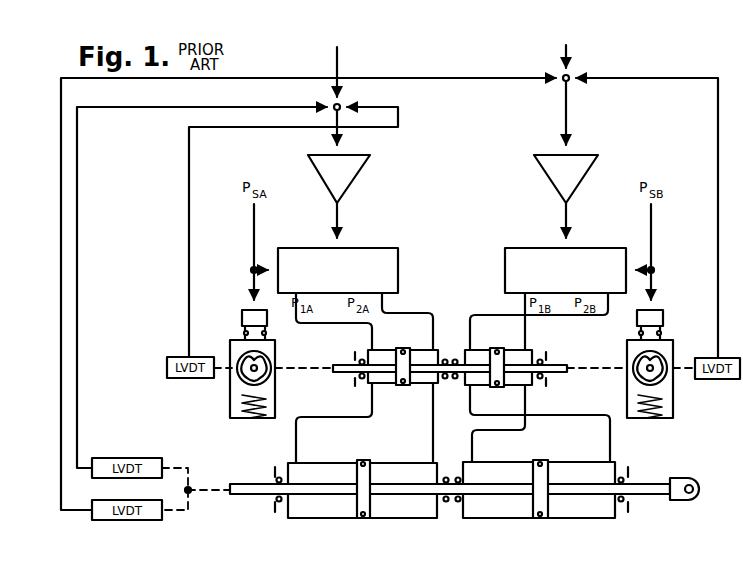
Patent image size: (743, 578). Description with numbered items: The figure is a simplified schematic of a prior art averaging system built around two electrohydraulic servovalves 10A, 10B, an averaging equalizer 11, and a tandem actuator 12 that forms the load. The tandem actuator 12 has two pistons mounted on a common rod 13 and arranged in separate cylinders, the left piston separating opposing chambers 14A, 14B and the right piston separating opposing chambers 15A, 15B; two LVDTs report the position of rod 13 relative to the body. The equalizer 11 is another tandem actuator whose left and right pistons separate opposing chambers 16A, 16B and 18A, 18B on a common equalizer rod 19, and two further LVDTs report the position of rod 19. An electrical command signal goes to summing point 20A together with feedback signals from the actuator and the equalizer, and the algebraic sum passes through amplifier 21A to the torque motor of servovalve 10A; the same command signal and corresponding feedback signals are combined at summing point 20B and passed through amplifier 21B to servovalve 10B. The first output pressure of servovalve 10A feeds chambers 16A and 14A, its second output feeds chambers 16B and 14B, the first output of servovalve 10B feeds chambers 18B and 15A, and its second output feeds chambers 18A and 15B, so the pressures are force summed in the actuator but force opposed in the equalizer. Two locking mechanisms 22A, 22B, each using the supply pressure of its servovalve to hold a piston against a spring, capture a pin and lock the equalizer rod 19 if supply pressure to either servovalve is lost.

The electrohydraulic servovalve 10A is at (395, 248).
The electrohydraulic servovalve 10B is at (522, 248).
The averaging equalizer 11 is at (451, 328).
The tandem actuator 12 is at (453, 512).
The common rod 13 is at (400, 492).
The actuator chamber 14A is at (356, 490).
The actuator chamber 14B is at (387, 489).
The actuator chamber 15A is at (545, 490).
The actuator chamber 15B is at (559, 489).
The equalizer chamber 16A is at (380, 386).
The equalizer chamber 16B is at (425, 387).
The equalizer chamber 18A is at (476, 387).
The equalizer chamber 18B is at (520, 387).
The equalizer rod 19 is at (556, 364).
The summing point 20A is at (346, 104).
The summing point 20B is at (574, 76).
The amplifier 21A is at (362, 171).
The amplifier 21B is at (590, 170).
The locking mechanism 22A is at (226, 339).
The locking mechanism 22B is at (678, 339).